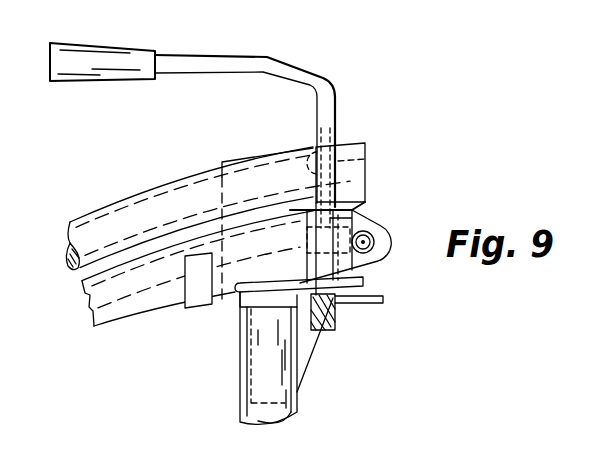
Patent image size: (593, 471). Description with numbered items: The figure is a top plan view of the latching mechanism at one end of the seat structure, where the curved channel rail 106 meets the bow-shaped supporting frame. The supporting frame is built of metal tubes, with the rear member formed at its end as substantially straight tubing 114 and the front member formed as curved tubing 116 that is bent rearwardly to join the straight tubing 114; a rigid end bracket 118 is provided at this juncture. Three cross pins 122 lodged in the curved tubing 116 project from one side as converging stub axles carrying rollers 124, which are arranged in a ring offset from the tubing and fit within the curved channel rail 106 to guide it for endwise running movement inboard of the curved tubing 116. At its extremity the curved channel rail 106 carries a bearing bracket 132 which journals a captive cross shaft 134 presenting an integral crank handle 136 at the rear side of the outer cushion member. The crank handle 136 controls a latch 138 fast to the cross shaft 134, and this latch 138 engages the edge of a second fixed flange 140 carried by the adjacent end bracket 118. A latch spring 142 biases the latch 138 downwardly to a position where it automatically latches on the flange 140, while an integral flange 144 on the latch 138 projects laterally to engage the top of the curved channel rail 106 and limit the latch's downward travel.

The curved channel rail 106 is at (83, 291).
The straight tubing 114 is at (257, 360).
The curved tubing 116 is at (93, 211).
The end bracket 118 is at (364, 150).
The cross pins 122 is at (310, 152).
The rollers 124 is at (307, 240).
The bearing bracket 132 is at (362, 211).
The cross shaft 134 is at (336, 108).
The crank handle 136 is at (192, 53).
The latch 138 is at (364, 282).
The second fixed flange 140 is at (234, 297).
The latch spring 142 is at (343, 306).
The integral flange 144 is at (186, 288).